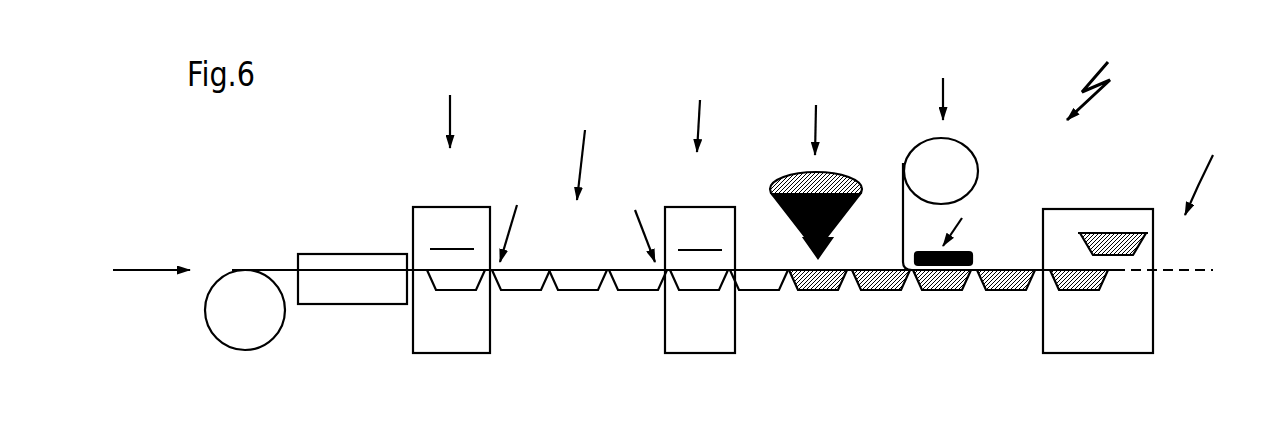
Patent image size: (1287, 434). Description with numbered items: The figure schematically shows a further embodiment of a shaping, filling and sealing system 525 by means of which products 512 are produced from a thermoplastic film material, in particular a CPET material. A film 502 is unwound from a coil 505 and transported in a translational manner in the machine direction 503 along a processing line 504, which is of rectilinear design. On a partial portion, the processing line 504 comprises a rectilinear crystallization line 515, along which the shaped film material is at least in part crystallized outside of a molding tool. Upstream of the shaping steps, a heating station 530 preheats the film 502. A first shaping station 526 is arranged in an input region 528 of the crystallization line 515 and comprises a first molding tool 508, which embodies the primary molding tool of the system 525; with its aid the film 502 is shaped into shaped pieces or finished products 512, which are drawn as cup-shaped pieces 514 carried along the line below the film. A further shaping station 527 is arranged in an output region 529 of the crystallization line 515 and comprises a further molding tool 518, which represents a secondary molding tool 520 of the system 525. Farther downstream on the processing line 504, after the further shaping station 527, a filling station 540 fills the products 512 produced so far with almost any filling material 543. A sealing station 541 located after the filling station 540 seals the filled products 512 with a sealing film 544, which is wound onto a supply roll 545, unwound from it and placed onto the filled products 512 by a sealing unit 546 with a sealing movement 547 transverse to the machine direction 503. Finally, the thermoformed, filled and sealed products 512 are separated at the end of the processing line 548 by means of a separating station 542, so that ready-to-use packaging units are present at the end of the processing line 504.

The film 502 is at (276, 268).
The machine direction 503 is at (143, 268).
The processing line 504 is at (1200, 268).
The coil 505 is at (226, 326).
The first molding tool 508 is at (452, 235).
The products 512 is at (1115, 232).
The capsule cup 514 is at (573, 290).
The crystallization line 515 is at (591, 148).
The further molding tool 518 is at (413, 337).
The secondary molding tool 520 is at (735, 342).
The shaping, filling and sealing system 525 is at (1122, 78).
The first shaping station 526 is at (457, 103).
The further shaping station 527 is at (702, 107).
The input region 528 is at (522, 214).
The output region 529 is at (636, 215).
The heating station 530 is at (341, 260).
The filling station 540 is at (816, 153).
The sealing station 541 is at (947, 79).
The separating station 542 is at (1153, 325).
The filling material 543 is at (808, 243).
The sealing film 544 is at (903, 227).
The supply roll 545 is at (956, 150).
The sealing unit 546 is at (958, 252).
The sealing movement 547 is at (978, 215).
The end of the processing line 548 is at (1221, 168).